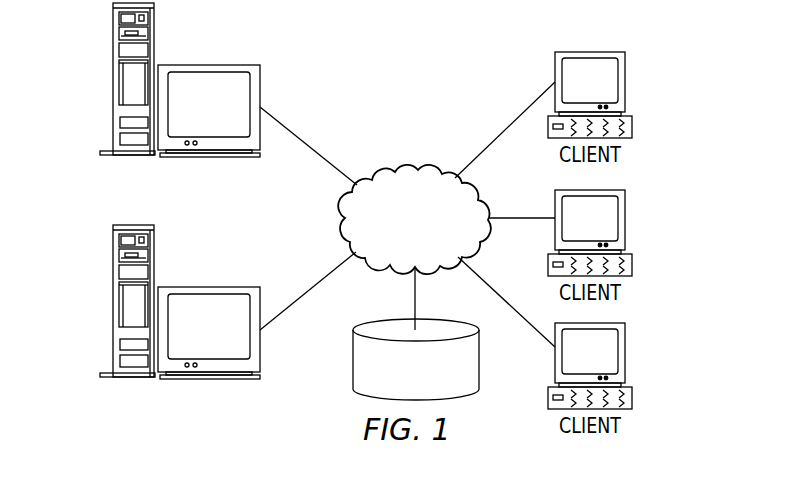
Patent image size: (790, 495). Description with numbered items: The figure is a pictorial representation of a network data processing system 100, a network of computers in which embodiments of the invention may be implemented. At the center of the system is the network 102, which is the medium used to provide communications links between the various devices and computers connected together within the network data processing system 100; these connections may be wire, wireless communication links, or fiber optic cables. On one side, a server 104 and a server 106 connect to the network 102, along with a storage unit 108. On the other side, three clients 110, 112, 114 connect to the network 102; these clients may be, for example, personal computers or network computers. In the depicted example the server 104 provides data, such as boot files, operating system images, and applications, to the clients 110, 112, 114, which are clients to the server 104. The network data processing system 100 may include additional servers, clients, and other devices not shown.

The network data processing system 100 is at (466, 60).
The network 102 is at (393, 172).
The server 104 is at (113, 78).
The server 106 is at (113, 302).
The storage unit 108 is at (353, 360).
The client 110 is at (626, 82).
The client 112 is at (626, 220).
The client 114 is at (626, 356).